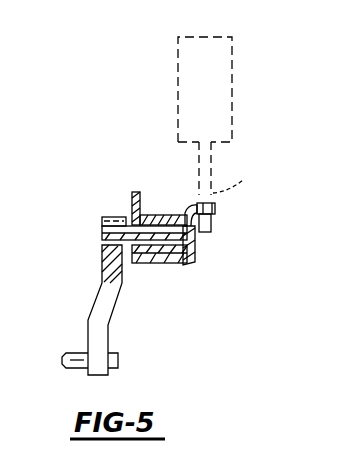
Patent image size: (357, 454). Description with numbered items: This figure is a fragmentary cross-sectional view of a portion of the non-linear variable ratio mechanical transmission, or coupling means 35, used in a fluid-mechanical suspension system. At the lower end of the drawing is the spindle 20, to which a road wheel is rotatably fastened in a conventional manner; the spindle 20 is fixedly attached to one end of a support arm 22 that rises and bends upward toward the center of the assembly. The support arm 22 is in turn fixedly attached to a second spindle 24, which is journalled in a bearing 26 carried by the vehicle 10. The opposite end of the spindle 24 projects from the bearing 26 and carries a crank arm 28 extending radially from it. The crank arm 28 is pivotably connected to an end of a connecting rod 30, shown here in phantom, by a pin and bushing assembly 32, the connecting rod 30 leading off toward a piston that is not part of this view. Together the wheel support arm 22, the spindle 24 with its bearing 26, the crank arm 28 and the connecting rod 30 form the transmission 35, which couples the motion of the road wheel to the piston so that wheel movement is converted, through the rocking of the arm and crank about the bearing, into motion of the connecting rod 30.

The vehicle 10 is at (138, 192).
The spindle 20 is at (118, 362).
The support arm 22 is at (112, 322).
The second spindle 24 is at (190, 248).
The bearing 26 is at (147, 257).
The crank arm 28 is at (190, 200).
The connecting rod 30 is at (217, 116).
The pin and bushing assembly 32 is at (215, 216).
The non-linear variable ratio mechanical transmission 35 is at (115, 214).